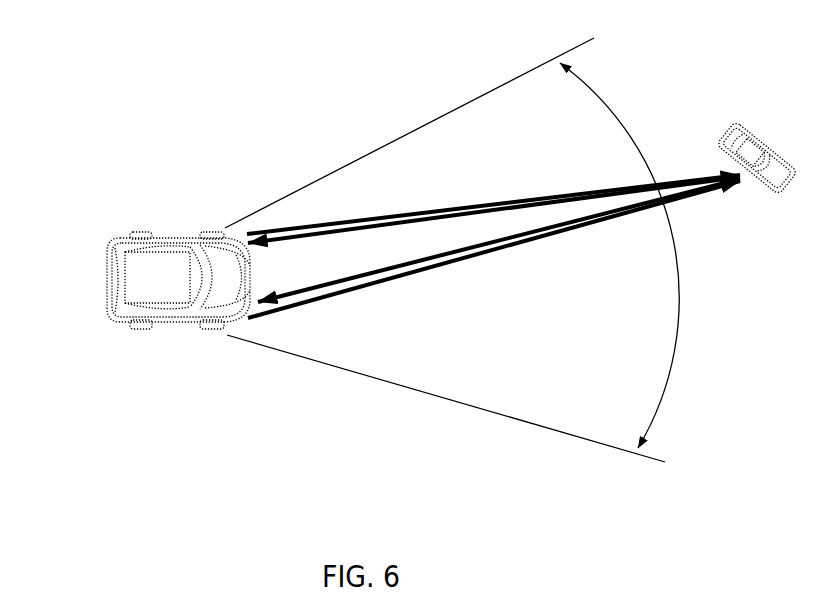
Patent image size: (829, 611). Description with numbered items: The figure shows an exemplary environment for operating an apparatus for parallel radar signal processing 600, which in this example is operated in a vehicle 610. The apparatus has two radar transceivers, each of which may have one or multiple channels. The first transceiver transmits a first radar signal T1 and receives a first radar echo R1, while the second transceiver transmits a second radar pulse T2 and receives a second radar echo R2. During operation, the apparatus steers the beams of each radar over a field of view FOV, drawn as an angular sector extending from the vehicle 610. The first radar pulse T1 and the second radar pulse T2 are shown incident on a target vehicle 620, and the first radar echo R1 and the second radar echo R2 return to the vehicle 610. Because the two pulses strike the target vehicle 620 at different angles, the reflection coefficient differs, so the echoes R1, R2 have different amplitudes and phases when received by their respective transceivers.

The apparatus for parallel radar signal processing 600 is at (392, 56).
The vehicle 610 is at (123, 245).
The target vehicle 620 is at (756, 128).
The first radar signal T1 is at (290, 228).
The second radar pulse T2 is at (298, 313).
The first radar echo R1 is at (287, 245).
The second radar echo R2 is at (353, 272).
The field of view FOV is at (683, 300).